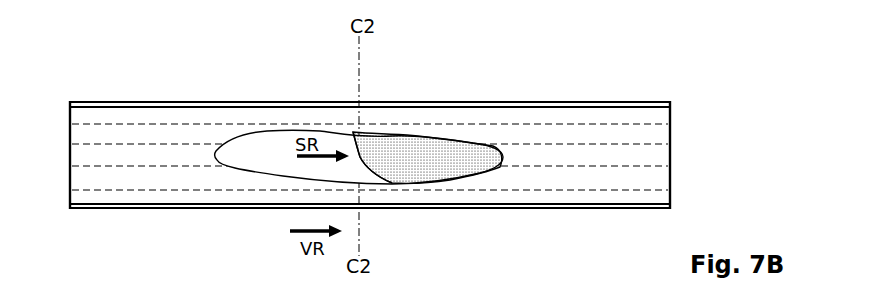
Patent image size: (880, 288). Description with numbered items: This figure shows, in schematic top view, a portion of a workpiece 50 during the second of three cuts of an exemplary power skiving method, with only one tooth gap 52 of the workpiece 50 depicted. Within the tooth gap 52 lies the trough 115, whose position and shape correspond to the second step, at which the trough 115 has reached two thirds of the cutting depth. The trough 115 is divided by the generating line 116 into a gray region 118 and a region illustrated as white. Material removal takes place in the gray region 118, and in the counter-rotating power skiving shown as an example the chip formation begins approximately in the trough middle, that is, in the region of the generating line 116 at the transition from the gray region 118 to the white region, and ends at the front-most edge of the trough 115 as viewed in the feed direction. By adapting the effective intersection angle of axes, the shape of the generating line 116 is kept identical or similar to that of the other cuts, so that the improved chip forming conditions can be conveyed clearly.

The workpiece 50 is at (70, 100).
The tooth gap 52 is at (690, 191).
The trough 115 is at (263, 138).
The generating line 116 is at (353, 133).
The gray region 118 is at (427, 157).